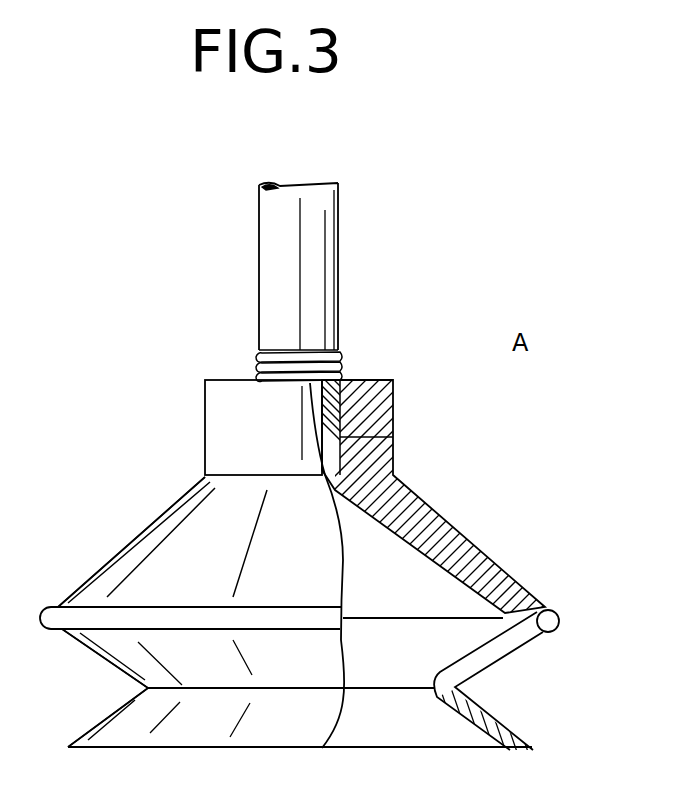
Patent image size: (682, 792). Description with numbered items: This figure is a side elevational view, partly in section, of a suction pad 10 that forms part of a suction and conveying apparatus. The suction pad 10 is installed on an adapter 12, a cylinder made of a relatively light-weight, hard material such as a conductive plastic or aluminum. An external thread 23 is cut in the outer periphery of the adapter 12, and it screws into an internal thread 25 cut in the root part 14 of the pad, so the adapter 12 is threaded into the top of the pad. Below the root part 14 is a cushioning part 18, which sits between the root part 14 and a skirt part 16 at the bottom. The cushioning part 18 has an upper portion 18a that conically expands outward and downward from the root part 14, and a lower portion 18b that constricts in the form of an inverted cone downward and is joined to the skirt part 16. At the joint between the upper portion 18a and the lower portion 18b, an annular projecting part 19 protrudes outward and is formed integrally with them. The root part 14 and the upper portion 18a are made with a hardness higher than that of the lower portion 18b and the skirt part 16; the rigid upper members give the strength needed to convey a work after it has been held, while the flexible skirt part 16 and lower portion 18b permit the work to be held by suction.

The suction pad 10 is at (508, 473).
The adapter 12 is at (328, 220).
The root part 14 is at (395, 392).
The skirt part 16 is at (130, 712).
The cushioning part 18 is at (137, 558).
The upper portion of the cushioning part 18a is at (462, 548).
The lower portion of the cushioning part 18b is at (488, 660).
The annular projecting part 19 is at (557, 616).
The external thread 23 is at (260, 370).
The internal thread 25 is at (395, 443).